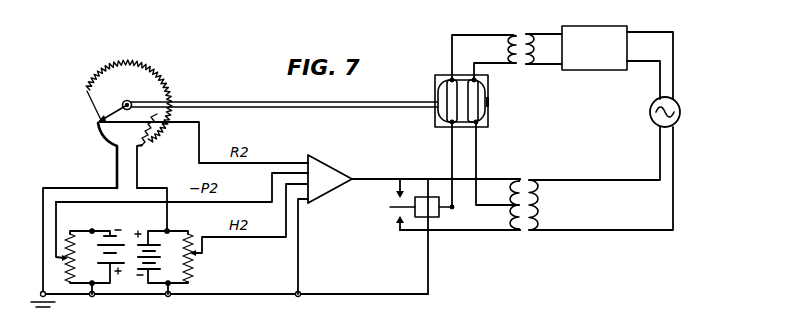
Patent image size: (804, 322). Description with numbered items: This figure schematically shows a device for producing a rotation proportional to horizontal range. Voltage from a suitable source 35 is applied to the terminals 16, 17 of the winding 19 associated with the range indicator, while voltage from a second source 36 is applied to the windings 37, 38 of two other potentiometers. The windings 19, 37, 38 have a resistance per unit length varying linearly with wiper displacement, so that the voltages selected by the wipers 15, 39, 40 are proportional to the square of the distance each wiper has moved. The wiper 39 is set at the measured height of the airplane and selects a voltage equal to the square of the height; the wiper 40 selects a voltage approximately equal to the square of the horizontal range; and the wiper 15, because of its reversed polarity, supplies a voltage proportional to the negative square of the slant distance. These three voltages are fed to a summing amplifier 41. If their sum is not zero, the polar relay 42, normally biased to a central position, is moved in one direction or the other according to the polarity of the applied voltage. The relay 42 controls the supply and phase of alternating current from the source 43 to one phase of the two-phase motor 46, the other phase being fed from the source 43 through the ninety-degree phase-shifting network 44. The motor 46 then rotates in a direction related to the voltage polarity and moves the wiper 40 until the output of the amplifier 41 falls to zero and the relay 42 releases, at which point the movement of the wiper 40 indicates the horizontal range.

The wiper 15 is at (56, 222).
The terminal 16 is at (93, 229).
The terminal 17 is at (90, 272).
The winding 19 is at (74, 256).
The source 35 is at (128, 238).
The source 36 is at (146, 231).
The winding 37 is at (191, 270).
The winding 38 is at (88, 107).
The wiper 39 is at (220, 238).
The wiper 40 is at (88, 92).
The summing amplifier 41 is at (328, 168).
The relay 42 is at (432, 218).
The source 43 is at (679, 107).
The 90-degree phase-shifting network 44 is at (606, 26).
The two-phase motor 46 is at (488, 116).